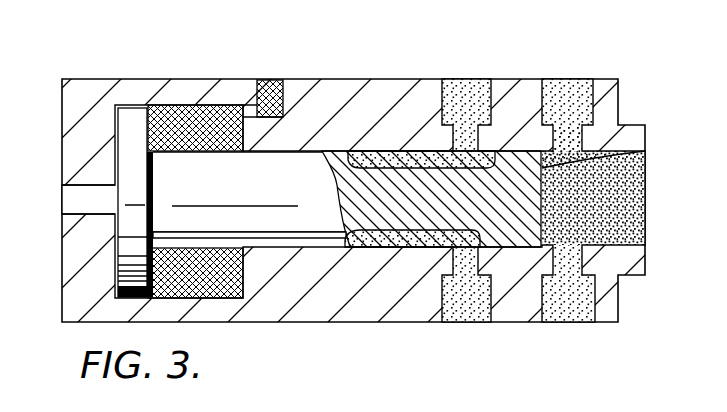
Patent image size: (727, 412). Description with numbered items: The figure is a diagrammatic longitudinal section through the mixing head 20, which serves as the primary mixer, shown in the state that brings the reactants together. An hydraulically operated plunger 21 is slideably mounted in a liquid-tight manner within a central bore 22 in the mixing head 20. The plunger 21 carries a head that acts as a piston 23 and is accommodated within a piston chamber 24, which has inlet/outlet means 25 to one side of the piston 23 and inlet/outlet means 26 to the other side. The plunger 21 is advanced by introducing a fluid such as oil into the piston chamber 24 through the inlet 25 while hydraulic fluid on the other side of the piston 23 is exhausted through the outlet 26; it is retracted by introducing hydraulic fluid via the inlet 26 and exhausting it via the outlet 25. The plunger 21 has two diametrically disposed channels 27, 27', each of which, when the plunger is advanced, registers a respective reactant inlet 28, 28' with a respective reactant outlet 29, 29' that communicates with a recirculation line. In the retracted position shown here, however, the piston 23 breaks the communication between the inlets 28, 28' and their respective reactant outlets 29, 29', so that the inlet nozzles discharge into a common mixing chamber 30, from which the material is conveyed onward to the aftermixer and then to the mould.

The mixing head 20 is at (342, 107).
The plunger 21 is at (293, 195).
The central bore 22 is at (311, 240).
The piston 23 is at (133, 117).
The piston chamber 24 is at (182, 110).
The inlet/outlet means 25 is at (78, 200).
The inlet/outlet means 26 is at (275, 80).
The channel 27 is at (412, 299).
The channel 27' is at (421, 93).
The reactant inlet 28 is at (557, 309).
The reactant inlet 28' is at (593, 92).
The reactant outlet 29 is at (457, 310).
The reactant outlet 29' is at (466, 83).
The mixing chamber 30 is at (623, 182).